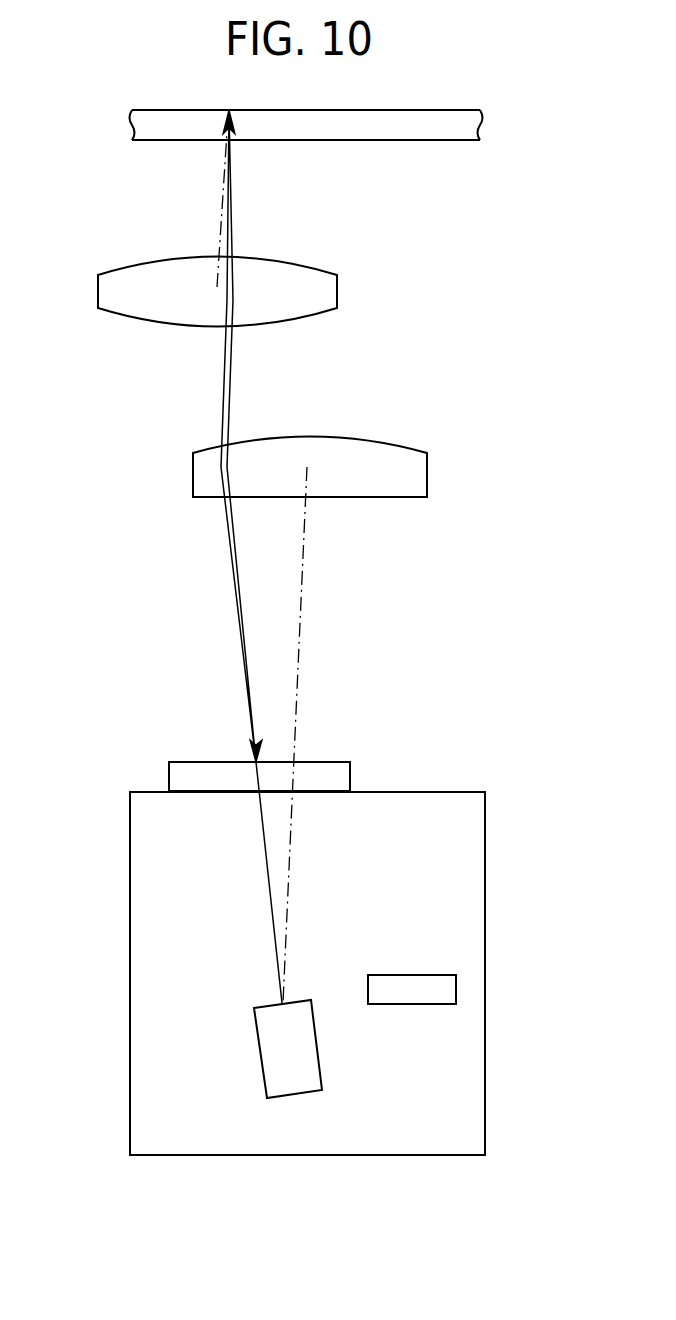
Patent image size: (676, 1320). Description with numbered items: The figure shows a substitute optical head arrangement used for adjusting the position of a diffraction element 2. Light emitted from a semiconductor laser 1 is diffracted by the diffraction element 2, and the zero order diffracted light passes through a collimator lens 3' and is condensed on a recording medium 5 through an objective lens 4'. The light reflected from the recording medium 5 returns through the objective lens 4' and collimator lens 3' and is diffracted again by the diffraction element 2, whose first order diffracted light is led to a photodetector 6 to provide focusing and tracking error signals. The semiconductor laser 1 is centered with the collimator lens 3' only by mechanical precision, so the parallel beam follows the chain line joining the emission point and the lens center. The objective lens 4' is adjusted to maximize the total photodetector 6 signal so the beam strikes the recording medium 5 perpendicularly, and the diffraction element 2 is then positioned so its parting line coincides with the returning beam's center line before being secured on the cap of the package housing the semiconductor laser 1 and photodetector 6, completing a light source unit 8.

The semiconductor laser 1 is at (260, 1063).
The diffraction element 2 is at (182, 775).
The collimator lens 3' is at (267, 467).
The objective lens 4' is at (174, 292).
The recording medium 5 is at (460, 133).
The photodetector 6 is at (443, 990).
The light source unit 8 is at (503, 823).